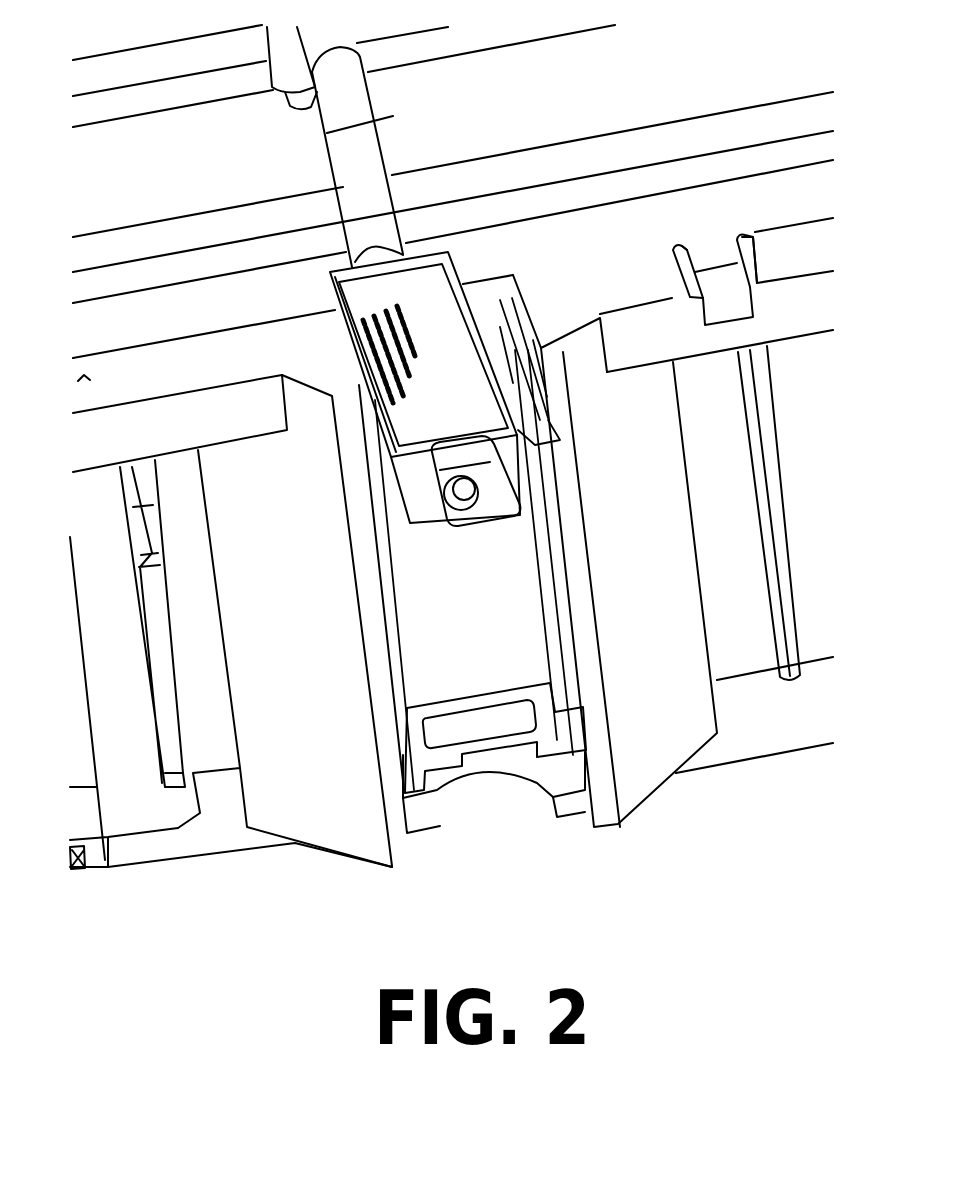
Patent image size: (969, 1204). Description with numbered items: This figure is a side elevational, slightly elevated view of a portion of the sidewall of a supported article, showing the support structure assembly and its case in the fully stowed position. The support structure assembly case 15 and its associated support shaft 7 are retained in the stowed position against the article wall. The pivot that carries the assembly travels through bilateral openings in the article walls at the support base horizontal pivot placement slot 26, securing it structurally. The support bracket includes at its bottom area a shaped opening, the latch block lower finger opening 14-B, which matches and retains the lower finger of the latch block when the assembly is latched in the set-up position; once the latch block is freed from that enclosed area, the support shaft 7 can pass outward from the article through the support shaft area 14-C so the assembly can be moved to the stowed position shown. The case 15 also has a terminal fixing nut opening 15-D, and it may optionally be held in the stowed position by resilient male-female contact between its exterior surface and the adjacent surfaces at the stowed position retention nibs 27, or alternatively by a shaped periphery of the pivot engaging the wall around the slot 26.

The support shaft 7 is at (318, 162).
The support structure assembly case 15 is at (326, 296).
The support structure assembly case terminal fixing nut opening 15-D is at (443, 484).
The support base horizontal pivot placement slot 26 is at (277, 510).
The support base movable support structure assembly stowed position retention nibs 27 is at (530, 320).
The latch block lower finger opening 14-B is at (470, 723).
The support structure assembly support shaft 14-C is at (490, 750).